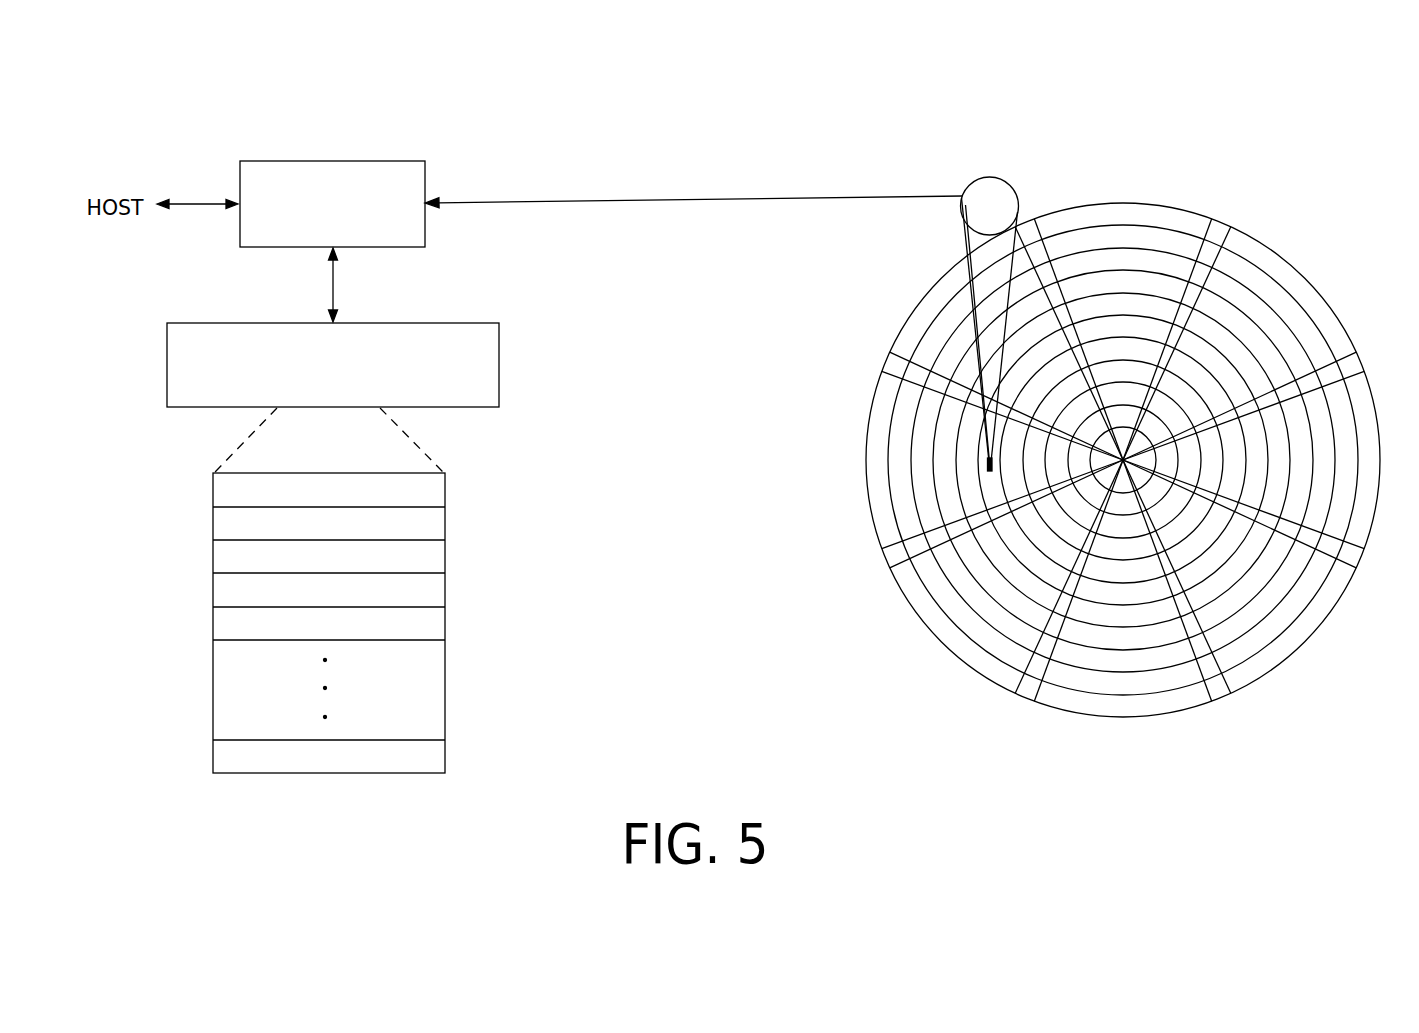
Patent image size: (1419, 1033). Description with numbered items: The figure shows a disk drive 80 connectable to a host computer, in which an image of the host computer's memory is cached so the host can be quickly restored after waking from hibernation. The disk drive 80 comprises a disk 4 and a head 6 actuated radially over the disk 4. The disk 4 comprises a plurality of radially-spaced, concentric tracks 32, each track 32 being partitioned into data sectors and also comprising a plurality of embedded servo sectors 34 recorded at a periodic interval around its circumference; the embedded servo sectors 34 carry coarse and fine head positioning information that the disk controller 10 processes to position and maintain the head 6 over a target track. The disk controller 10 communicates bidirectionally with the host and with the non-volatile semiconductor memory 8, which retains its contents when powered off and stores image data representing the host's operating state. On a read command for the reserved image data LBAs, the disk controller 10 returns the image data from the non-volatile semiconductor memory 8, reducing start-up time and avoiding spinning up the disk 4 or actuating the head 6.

The disk controller 10 is at (331, 160).
The non-volatile semiconductor memory 8 is at (500, 363).
The disk drive 80 is at (1176, 104).
The disk 4 is at (1278, 233).
The track 32 is at (1118, 238).
The embedded servo sector 34 is at (1024, 226).
The head 6 is at (978, 486).